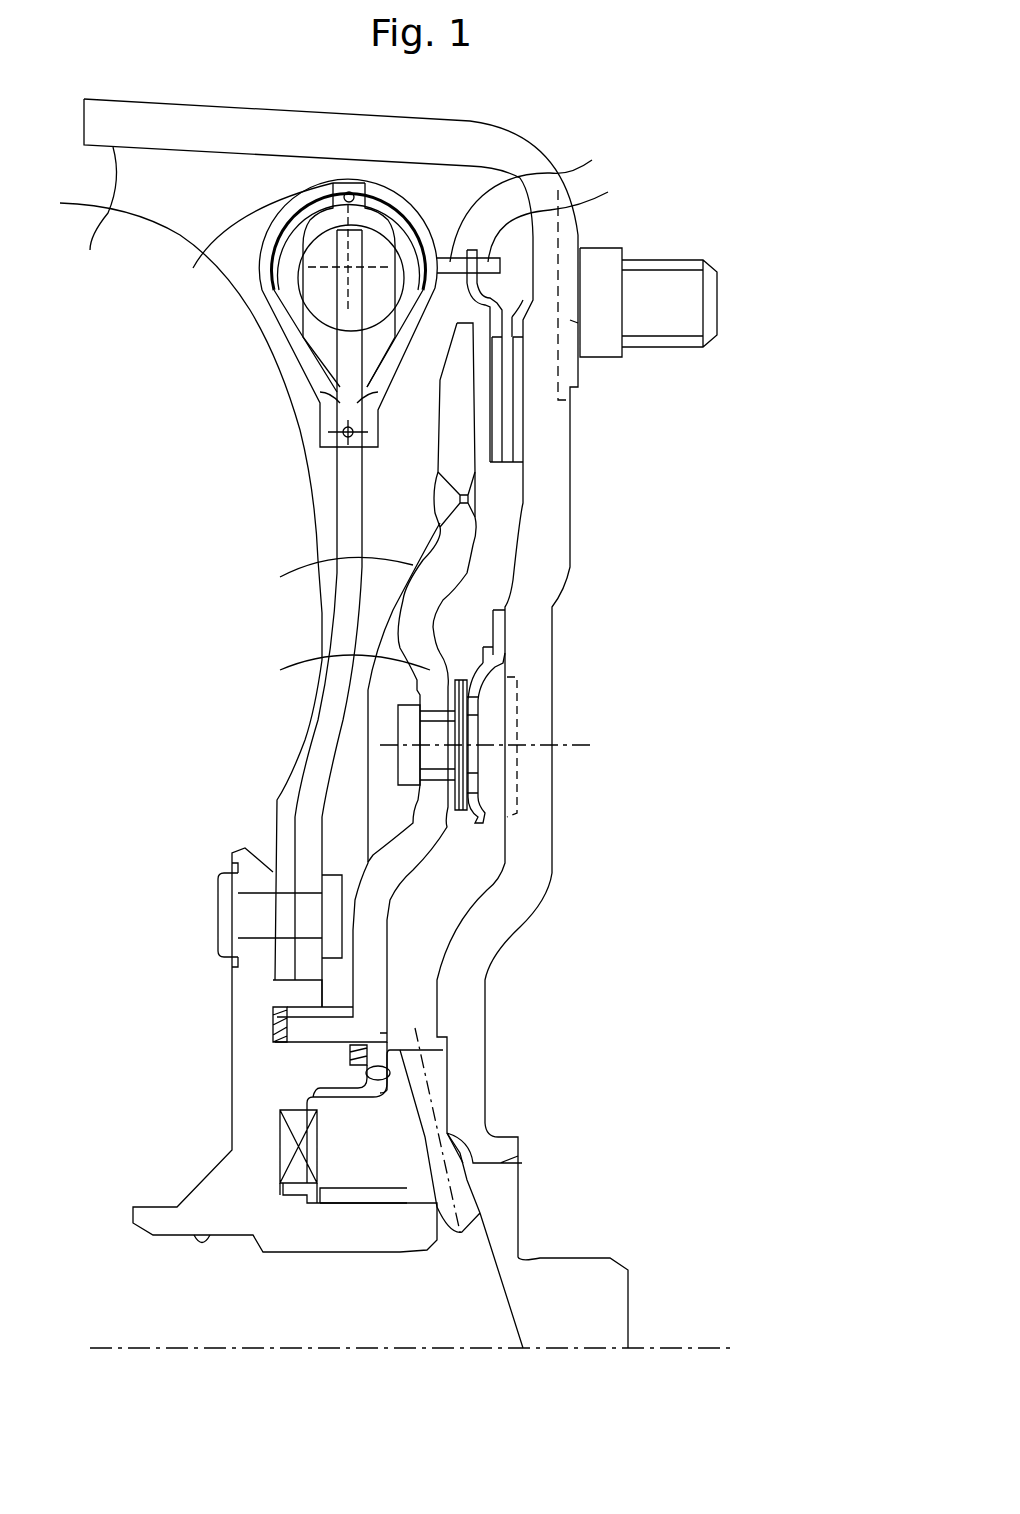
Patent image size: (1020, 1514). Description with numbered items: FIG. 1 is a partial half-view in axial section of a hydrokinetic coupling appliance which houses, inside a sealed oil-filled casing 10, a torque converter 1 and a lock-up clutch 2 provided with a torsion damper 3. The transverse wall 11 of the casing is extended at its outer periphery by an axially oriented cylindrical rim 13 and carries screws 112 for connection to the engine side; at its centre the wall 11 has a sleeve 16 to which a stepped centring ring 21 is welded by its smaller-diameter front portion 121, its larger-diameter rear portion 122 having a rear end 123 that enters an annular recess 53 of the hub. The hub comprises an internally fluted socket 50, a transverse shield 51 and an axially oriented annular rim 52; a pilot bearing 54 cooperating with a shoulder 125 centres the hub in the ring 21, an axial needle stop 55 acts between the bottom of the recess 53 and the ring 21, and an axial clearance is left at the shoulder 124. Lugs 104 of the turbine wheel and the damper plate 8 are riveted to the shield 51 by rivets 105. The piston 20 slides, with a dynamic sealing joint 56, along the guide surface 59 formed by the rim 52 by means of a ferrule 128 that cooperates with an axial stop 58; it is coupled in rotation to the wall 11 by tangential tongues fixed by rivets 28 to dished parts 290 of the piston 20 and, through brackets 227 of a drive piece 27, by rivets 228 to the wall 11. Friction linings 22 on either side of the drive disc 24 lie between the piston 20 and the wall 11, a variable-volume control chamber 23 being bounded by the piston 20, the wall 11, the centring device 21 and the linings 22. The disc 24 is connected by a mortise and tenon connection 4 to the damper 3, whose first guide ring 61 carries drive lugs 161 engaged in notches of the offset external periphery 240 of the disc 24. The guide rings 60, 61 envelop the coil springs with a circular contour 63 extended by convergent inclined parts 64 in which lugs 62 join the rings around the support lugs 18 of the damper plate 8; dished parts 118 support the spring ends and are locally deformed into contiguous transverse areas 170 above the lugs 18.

The torque converter 1 is at (150, 220).
The lock-up clutch 2 is at (478, 487).
The torsion damper 3 is at (325, 617).
The mortise and tenon type connection 4 is at (546, 318).
The damper plate 8 is at (307, 770).
The sealed casing 10 is at (578, 507).
The transverse wall 11 is at (553, 872).
The cylindrical rim 13 is at (96, 210).
The sleeve 16 is at (508, 1133).
The lugs 18 is at (297, 355).
The piston 20 is at (280, 577).
The centring device 21 is at (628, 1276).
The friction linings 22 is at (512, 450).
The control chamber 23 is at (448, 912).
The drive disc 24 is at (510, 422).
The drive piece 27 is at (503, 633).
The rivets 28 is at (395, 733).
The internally fluted socket 50 is at (363, 1223).
The shield 51 is at (253, 953).
The annular rim 52 is at (305, 1070).
The annular recess 53 is at (300, 1192).
The bearing 54 is at (337, 1197).
The axial stop 55 is at (295, 1120).
The sealing joint 56 is at (380, 1030).
The axial stop 58 is at (270, 1020).
The guide surface 59 is at (345, 1037).
The guide ring 60 is at (250, 293).
The first guide ring 61 is at (426, 209).
The lugs 62 is at (320, 425).
The circular contour 63 is at (253, 295).
The inclined part 64 is at (297, 387).
The lugs 104 is at (280, 848).
The rivets 105 is at (225, 905).
The screws 112 is at (688, 250).
The dished parts 118 is at (277, 327).
The front portion 121 is at (522, 1200).
The rear portion 122 is at (380, 1117).
The rear end 123 is at (333, 1138).
The shoulder 124 is at (380, 1082).
The shoulder 125 is at (410, 1215).
The ferrule 128 is at (270, 1030).
The drive lugs 161 is at (543, 202).
The transverse areas 170 is at (193, 268).
The brackets 227 is at (480, 825).
The rivets 228 is at (503, 663).
The external periphery 240 is at (505, 300).
The dished parts 290 is at (280, 670).